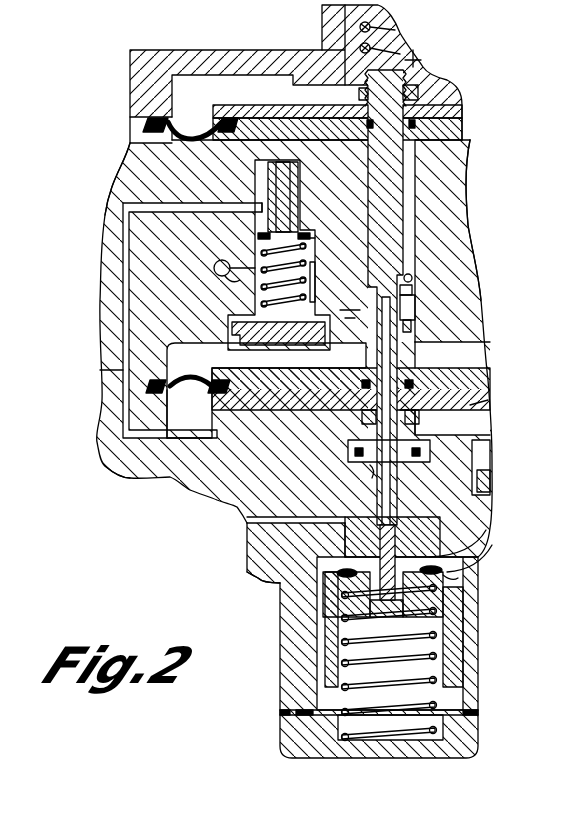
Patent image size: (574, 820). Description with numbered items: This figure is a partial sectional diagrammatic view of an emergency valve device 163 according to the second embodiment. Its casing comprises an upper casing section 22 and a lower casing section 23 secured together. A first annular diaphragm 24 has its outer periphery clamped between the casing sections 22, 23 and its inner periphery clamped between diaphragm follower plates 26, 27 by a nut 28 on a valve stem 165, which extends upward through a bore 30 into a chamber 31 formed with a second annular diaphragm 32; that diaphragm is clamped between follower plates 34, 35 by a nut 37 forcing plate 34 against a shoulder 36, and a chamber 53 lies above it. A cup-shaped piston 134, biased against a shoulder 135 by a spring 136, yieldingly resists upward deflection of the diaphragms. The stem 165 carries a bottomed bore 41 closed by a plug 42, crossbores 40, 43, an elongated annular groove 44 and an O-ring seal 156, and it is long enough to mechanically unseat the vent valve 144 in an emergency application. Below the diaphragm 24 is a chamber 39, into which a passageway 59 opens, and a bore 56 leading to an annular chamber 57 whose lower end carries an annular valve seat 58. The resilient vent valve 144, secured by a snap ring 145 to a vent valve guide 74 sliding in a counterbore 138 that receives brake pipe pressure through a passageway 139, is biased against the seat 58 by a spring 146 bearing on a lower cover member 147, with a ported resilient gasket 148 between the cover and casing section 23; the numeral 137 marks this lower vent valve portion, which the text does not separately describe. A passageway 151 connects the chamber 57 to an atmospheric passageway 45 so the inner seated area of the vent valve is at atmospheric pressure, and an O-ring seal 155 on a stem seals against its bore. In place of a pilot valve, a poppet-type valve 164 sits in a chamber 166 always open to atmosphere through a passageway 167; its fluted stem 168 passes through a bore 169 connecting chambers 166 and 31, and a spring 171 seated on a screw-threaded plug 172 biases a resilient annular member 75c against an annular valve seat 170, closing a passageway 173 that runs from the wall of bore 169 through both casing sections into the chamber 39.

The upper casing section 22 is at (110, 305).
The lower casing section 23 is at (135, 475).
The first annular diaphragm 24 is at (210, 378).
The diaphragm follower plate 26 is at (478, 402).
The diaphragm follower plate 27 is at (478, 384).
The nut 28 is at (419, 417).
The bore 30 is at (372, 365).
The chamber 31 is at (175, 152).
The second annular diaphragm 32 is at (150, 108).
The diaphragm follower plate 34 is at (268, 130).
The diaphragm follower plate 35 is at (268, 110).
The second shoulder 36 is at (425, 135).
The nut 37 is at (418, 92).
The chamber 39 is at (180, 460).
The crossbore 40 is at (410, 357).
The bottomed bore 41 is at (412, 326).
The plug 42 is at (400, 500).
The second crossbore 43 is at (413, 288).
The elongated peripheral annular groove 44 is at (416, 304).
The passageway 45 is at (358, 305).
The chamber 53 is at (205, 77).
The bore 56 is at (372, 478).
The annular chamber 57 is at (348, 540).
The annular valve seat 58 is at (275, 582).
The passageway 59 is at (490, 480).
The spring seat 74 is at (450, 625).
The resilient annular member 75c is at (316, 240).
The cup-shaped piston 134 is at (416, 60).
The shoulder 135 is at (360, 48).
The spring 136 is at (360, 26).
The cylinder housing 137 is at (478, 662).
The counterbore 138 is at (463, 606).
The passageway 139 is at (495, 528).
The vent valve 144 is at (450, 582).
The snap ring 145 is at (442, 570).
The spring 146 is at (440, 650).
The lower cover member 147 is at (470, 732).
The ported resilient gasket 148 is at (282, 710).
The passageway 151 is at (247, 533).
The O-ring seal 155 is at (360, 458).
The O-ring seal 156 is at (412, 276).
The emergency valve device 163 is at (92, 373).
The poppet-type valve 164 is at (258, 238).
The valve stem 165 is at (368, 160).
The chamber 166 is at (316, 281).
The passageway 167 is at (240, 282).
The fluted valve stem 168 is at (268, 192).
The bore 169 is at (290, 205).
The annular valve seat 170 is at (265, 234).
The spring 171 is at (308, 262).
The screw-threaded plug 172 is at (298, 346).
The passageway 173 is at (123, 208).